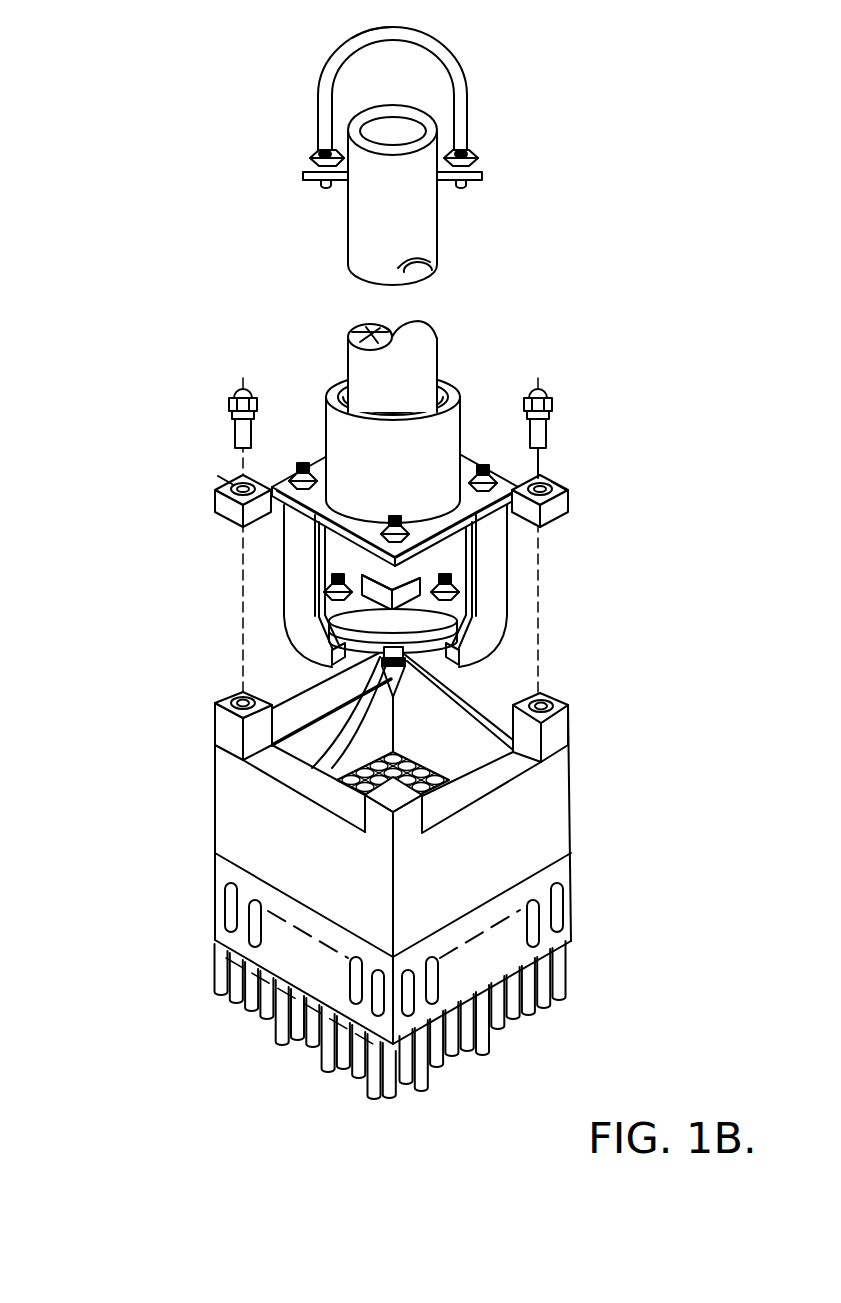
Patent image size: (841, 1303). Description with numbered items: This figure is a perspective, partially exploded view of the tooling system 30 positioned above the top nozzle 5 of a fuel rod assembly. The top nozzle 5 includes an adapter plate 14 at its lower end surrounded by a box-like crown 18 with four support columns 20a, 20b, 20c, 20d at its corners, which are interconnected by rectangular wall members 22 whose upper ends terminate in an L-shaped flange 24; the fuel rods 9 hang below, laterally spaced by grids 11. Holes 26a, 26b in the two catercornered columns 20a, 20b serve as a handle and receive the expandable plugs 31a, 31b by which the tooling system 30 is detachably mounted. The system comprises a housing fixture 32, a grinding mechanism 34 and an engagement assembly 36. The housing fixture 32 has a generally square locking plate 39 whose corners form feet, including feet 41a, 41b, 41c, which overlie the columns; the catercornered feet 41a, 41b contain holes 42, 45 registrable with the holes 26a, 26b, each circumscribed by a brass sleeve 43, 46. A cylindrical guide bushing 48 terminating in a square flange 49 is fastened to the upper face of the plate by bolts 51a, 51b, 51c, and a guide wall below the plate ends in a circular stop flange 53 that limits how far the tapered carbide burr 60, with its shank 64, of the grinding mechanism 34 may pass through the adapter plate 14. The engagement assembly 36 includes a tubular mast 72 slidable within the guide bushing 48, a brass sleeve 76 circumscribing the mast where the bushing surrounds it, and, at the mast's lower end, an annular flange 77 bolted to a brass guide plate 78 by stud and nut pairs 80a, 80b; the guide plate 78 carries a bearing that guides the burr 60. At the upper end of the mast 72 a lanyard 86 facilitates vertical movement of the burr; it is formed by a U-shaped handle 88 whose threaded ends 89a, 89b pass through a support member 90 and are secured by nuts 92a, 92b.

The tooling system 30 is at (146, 206).
The lanyard 86 is at (448, 52).
The U-shaped handle 88 is at (354, 37).
The tubular mast 72 is at (406, 220).
The support member 90 is at (483, 176).
The nut 92a is at (311, 157).
The nut 92b is at (479, 155).
The threaded end 89a is at (324, 186).
The threaded end 89b is at (462, 189).
The housing fixture 32 is at (170, 492).
The expandable plug 31a is at (231, 398).
The expandable plug 31b is at (552, 398).
The locking plate 39 is at (308, 528).
The annular flange 77 is at (314, 598).
The square flange 49 is at (470, 460).
The foot 41c is at (430, 590).
The stud and nut pair 80a is at (324, 592).
The stud and nut pair 80b is at (459, 588).
The guide plate 78 is at (331, 636).
The tapered carbide burr 60 is at (406, 656).
The cylindrical guide bushing 48 is at (409, 470).
The brass sleeve 76 is at (446, 380).
The engagement assembly 36 is at (348, 340).
The bolt 51a is at (310, 466).
The bolt 51b is at (389, 521).
The bolt 51c is at (486, 468).
The foot 41a is at (216, 486).
The foot 41b is at (568, 492).
The hole 42 is at (234, 477).
The brass sleeve 43 is at (242, 506).
The brass sleeve 46 is at (549, 478).
The hole 45 is at (556, 487).
The top nozzle 5 is at (558, 793).
The box-like crown 18 is at (347, 888).
The wall member 22 is at (278, 855).
The grid 11 is at (556, 900).
The fuel rod 9 is at (258, 1003).
The support column 20a is at (228, 733).
The support column 20b is at (562, 728).
The support column 20c is at (421, 832).
The support column 20d is at (428, 665).
The L-shaped flange 24 is at (345, 792).
The shank 64 is at (384, 758).
The grinding mechanism 34 is at (338, 803).
The adapter plate 14 is at (458, 795).
The circular stop flange 53 is at (312, 689).
The hole 26a is at (228, 704).
The hole 26b is at (554, 703).